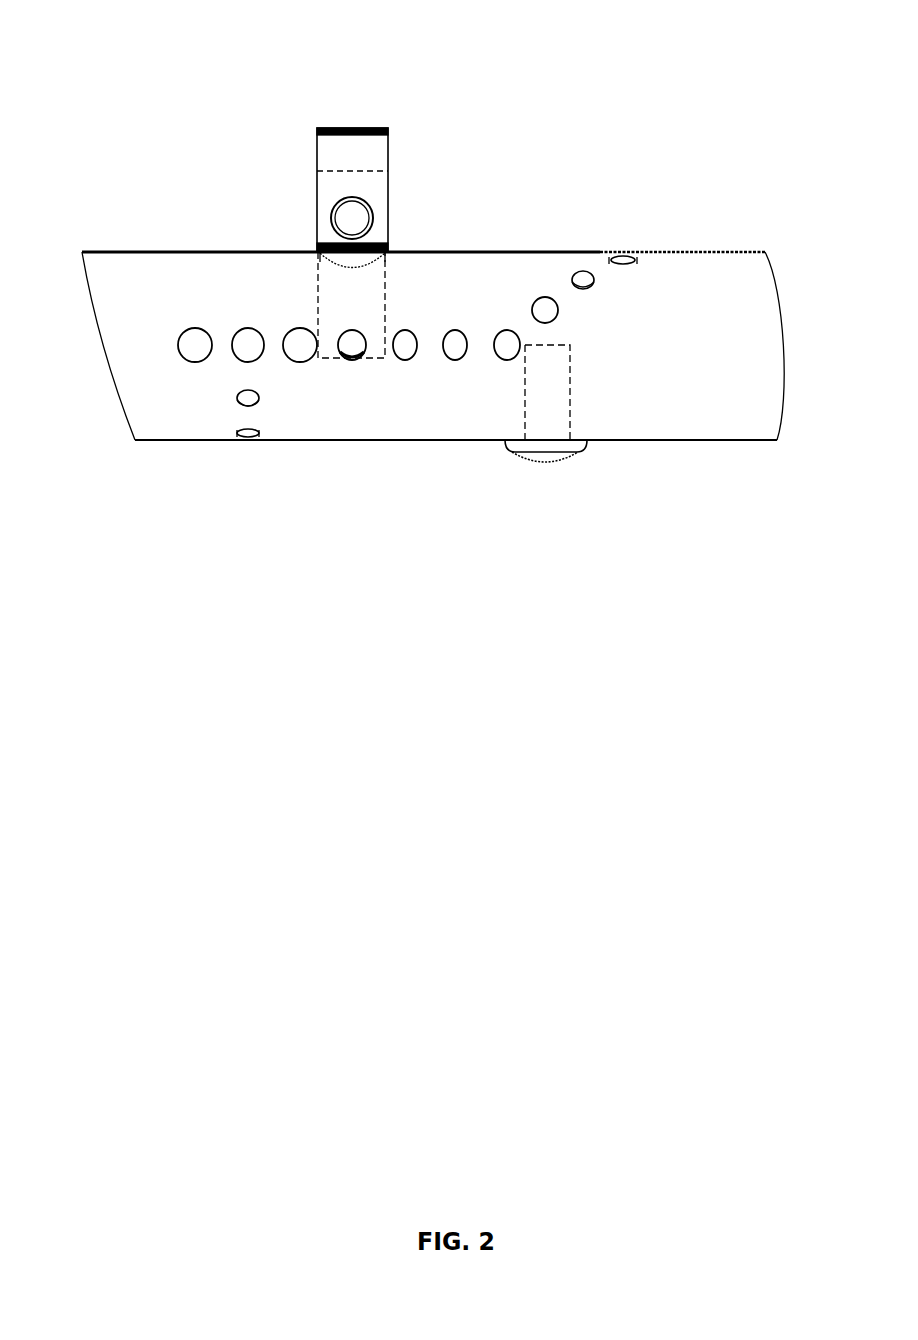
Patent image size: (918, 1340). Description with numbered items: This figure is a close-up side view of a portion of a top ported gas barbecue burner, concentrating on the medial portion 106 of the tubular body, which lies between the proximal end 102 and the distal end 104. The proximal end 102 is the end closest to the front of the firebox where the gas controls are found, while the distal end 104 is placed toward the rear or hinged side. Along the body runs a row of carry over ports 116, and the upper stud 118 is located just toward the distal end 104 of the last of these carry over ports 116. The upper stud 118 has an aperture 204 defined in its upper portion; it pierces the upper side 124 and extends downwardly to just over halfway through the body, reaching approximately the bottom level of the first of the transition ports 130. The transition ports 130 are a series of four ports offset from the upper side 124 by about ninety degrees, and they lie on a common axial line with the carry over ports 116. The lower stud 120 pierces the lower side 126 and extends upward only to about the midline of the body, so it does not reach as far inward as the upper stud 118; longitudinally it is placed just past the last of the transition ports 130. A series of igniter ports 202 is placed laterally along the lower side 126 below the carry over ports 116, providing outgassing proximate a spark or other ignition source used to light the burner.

The proximal end 102 is at (57, 668).
The distal end 104 is at (820, 185).
The medial portion 106 is at (697, 402).
The carry over ports 116 is at (245, 360).
The upper stud 118 is at (315, 183).
The lower stud 120 is at (525, 452).
The upper side 124 is at (129, 251).
The lower side 126 is at (315, 441).
The transition ports 130 is at (538, 292).
The igniter ports 202 is at (248, 441).
The aperture 204 is at (354, 214).